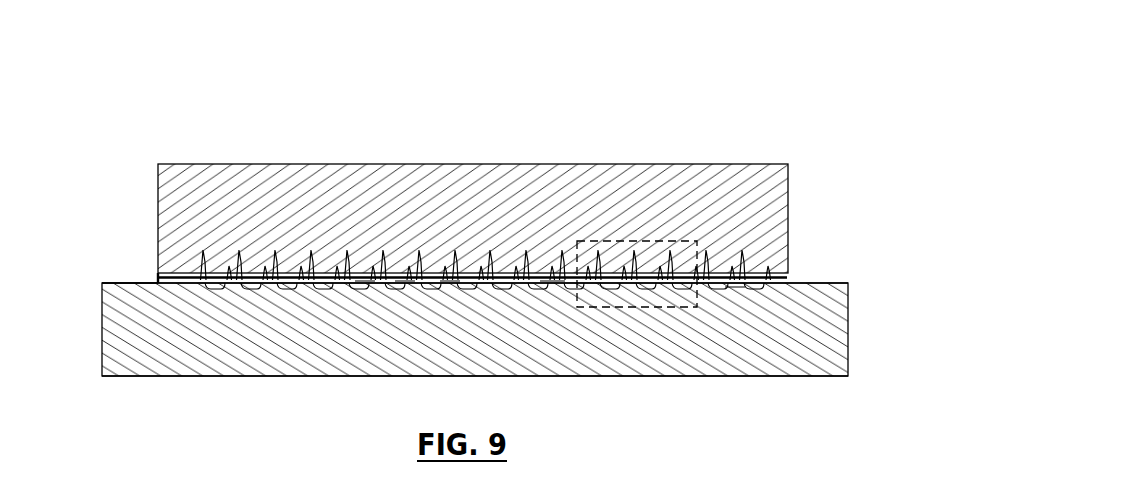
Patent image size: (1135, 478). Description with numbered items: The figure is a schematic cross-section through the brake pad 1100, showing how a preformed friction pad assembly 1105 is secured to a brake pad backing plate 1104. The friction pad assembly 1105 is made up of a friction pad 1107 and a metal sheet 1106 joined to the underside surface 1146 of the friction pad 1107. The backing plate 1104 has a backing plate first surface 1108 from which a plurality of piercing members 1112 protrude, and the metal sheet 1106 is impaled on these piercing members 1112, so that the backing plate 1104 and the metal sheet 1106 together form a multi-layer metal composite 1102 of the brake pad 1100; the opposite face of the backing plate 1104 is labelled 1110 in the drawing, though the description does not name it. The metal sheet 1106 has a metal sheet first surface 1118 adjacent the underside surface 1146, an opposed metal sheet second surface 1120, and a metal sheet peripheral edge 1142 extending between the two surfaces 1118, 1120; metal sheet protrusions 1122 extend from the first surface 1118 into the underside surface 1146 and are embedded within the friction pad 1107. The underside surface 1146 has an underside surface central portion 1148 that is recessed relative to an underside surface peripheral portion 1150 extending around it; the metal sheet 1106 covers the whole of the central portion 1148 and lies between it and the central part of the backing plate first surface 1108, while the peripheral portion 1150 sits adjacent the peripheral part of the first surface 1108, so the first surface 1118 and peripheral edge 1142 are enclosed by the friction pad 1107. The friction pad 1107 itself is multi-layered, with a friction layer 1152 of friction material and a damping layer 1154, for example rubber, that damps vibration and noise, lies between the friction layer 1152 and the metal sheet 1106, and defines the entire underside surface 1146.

The brake pad 1100 is at (780, 48).
The multi-layer metal composite 1102 is at (900, 283).
The brake pad backing plate 1104 is at (808, 352).
The metal sheet 1106 is at (768, 287).
The preformed friction pad assembly 1105 is at (147, 145).
The friction pad 1107 is at (99, 184).
The friction layer 1152 is at (168, 212).
The damping layer 1154 is at (158, 278).
The backing plate first surface 1108 is at (114, 273).
The substrate bottom surface 1110 is at (111, 380).
The piercing members 1112 is at (242, 268).
The metal sheet first surface 1118 is at (371, 292).
The metal sheet second surface 1120 is at (371, 292).
The metal sheet protrusions 1122 is at (450, 268).
The metal sheet peripheral edge 1142 is at (188, 278).
The underside surface 1146 is at (648, 240).
The underside surface central portion 1148 is at (551, 286).
The underside surface peripheral portion 1150 is at (740, 290).